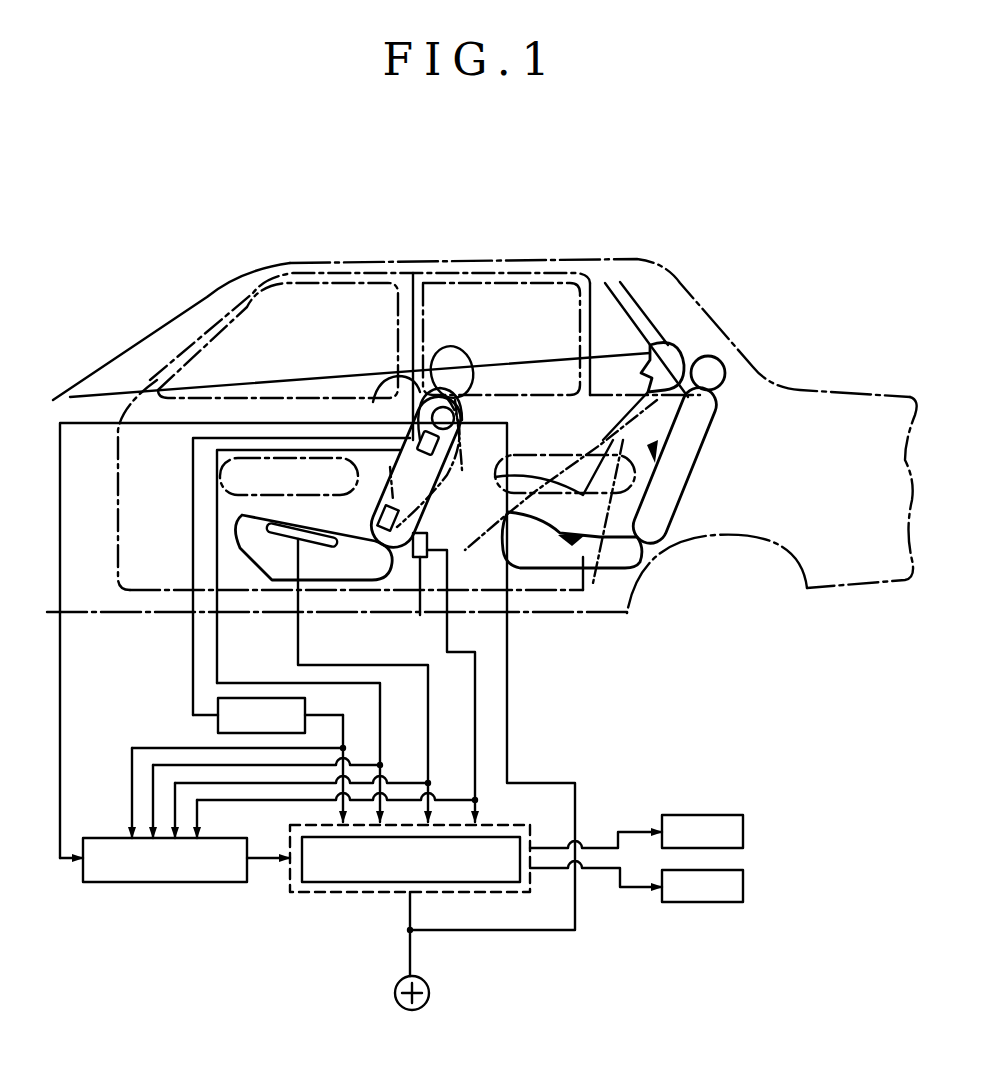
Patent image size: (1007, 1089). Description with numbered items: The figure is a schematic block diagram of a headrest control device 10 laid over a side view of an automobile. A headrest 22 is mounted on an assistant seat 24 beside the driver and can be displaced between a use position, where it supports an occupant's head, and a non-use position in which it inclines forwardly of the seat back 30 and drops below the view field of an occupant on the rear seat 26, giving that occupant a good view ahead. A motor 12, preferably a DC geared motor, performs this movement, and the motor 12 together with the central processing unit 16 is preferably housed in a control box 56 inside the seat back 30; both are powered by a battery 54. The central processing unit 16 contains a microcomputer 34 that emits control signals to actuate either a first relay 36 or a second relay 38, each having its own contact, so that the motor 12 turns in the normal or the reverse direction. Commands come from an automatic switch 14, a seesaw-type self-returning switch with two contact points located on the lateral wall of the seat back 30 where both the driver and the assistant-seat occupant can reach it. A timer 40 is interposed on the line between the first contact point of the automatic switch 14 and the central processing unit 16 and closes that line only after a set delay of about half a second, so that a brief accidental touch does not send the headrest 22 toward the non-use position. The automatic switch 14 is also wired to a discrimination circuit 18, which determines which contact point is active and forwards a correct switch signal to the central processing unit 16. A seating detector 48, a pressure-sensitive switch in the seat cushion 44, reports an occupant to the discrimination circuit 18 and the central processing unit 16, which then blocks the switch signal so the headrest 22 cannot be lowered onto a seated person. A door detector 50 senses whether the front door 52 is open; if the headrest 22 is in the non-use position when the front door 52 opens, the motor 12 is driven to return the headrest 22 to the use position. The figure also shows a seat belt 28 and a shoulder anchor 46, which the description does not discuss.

The headrest control device 10 is at (701, 678).
The motor 12 is at (452, 442).
The automatic switch 14 is at (443, 467).
The central processing unit 16 is at (342, 892).
The discrimination circuit 18 is at (203, 882).
The headrest 22 is at (456, 354).
The assistant seat 24 is at (352, 508).
The rear seat 26 is at (690, 480).
The seat belt 28 is at (315, 373).
The seat back 30 is at (416, 503).
The microcomputer 34 is at (377, 882).
The first relay 36 is at (738, 815).
The second relay 38 is at (740, 870).
The timer 40 is at (306, 708).
The seat cushion 44 is at (258, 560).
The shoulder anchor 46 is at (467, 410).
The seating detector 48 is at (328, 543).
The door detector 50 is at (421, 589).
The front door 52 is at (293, 402).
The battery 54 is at (432, 989).
The control box 56 is at (380, 488).